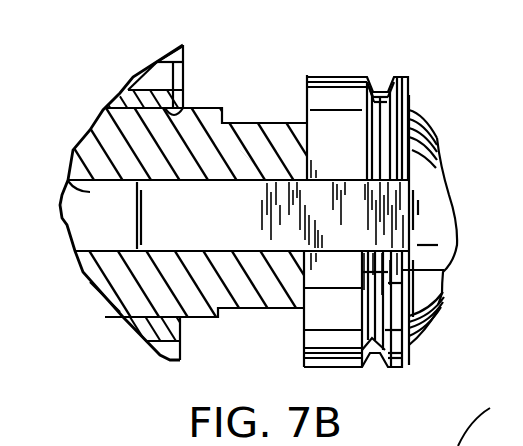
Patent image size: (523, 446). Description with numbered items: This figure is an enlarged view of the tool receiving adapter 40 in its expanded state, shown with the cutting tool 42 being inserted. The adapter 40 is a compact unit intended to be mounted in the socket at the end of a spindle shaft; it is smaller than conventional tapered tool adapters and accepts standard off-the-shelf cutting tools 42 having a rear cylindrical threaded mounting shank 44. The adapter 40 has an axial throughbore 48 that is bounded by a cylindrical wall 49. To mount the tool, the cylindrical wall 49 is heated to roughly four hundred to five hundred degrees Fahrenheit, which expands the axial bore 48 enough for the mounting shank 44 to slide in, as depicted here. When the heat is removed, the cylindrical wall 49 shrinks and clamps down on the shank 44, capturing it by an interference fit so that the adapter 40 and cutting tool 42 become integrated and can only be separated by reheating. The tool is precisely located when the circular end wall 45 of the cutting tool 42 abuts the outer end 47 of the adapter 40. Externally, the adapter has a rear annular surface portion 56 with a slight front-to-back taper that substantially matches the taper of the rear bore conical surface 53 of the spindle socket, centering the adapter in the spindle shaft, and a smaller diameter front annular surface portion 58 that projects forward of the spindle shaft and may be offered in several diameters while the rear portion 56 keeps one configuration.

The tool receiving adapter 40 is at (242, 103).
The cutting tool 42 is at (436, 119).
The mounting shank 44 is at (241, 225).
The circular end wall 45 is at (322, 75).
The outer end 47 is at (309, 151).
The axial throughbore 48 is at (71, 180).
The cylindrical wall 49 is at (257, 158).
The rear bore conical surface 53 is at (188, 106).
The rear annular surface portion 56 is at (200, 319).
The front annular surface portion 58 is at (233, 313).